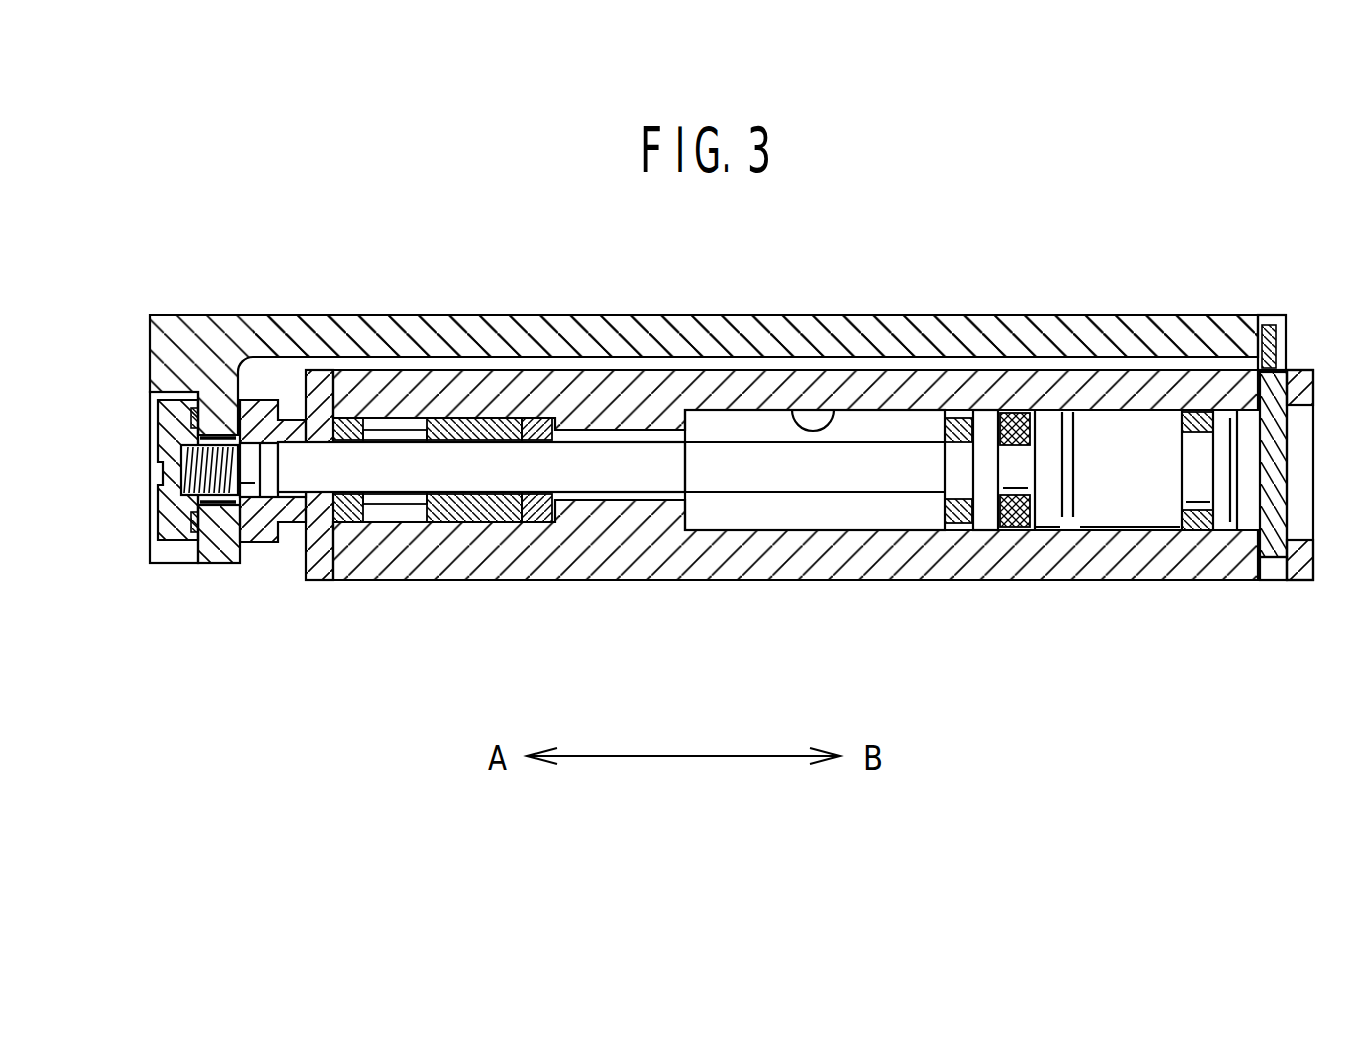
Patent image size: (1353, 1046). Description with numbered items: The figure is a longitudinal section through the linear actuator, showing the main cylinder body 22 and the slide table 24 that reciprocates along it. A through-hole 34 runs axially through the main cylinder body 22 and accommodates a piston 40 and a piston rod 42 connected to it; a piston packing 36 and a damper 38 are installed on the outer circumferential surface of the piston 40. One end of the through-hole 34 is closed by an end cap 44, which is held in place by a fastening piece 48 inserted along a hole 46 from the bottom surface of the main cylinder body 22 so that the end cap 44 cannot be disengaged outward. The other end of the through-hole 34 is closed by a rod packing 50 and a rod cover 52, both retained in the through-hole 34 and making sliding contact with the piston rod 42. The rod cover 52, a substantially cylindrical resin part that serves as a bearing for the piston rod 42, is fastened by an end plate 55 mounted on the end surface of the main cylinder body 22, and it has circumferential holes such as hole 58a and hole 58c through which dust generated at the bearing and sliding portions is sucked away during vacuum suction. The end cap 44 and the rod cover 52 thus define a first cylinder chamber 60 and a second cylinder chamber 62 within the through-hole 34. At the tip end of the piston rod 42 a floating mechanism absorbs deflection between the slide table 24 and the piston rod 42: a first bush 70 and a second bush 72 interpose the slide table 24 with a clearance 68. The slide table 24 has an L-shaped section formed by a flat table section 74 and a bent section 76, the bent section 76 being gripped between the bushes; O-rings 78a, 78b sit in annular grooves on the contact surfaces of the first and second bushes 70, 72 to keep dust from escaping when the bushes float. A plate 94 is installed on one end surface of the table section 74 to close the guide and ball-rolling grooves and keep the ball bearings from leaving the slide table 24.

The main cylinder body 22 is at (772, 451).
The slide table 24 is at (704, 338).
The through-hole 34 is at (833, 420).
The piston packing 36 is at (1007, 530).
The damper 38 is at (967, 528).
The piston 40 is at (985, 423).
The piston rod 42 is at (580, 473).
The end cap 44 is at (1142, 517).
The hole 46 is at (1283, 570).
The fastening piece 48 is at (1272, 502).
The rod packing 50 is at (548, 430).
The rod cover 52 is at (447, 515).
The end plate 55 is at (326, 398).
The hole 58a is at (378, 433).
The hole 58c is at (378, 522).
The first cylinder chamber 60 is at (1067, 520).
The second cylinder chamber 62 is at (815, 454).
The clearance 68 is at (212, 433).
The first bush 70 is at (163, 522).
The second bush 72 is at (268, 540).
The table section 74 is at (680, 345).
The bent section 76 is at (215, 562).
The O-ring 78a is at (178, 420).
The O-ring 78b is at (230, 545).
The plate 94 is at (1272, 348).